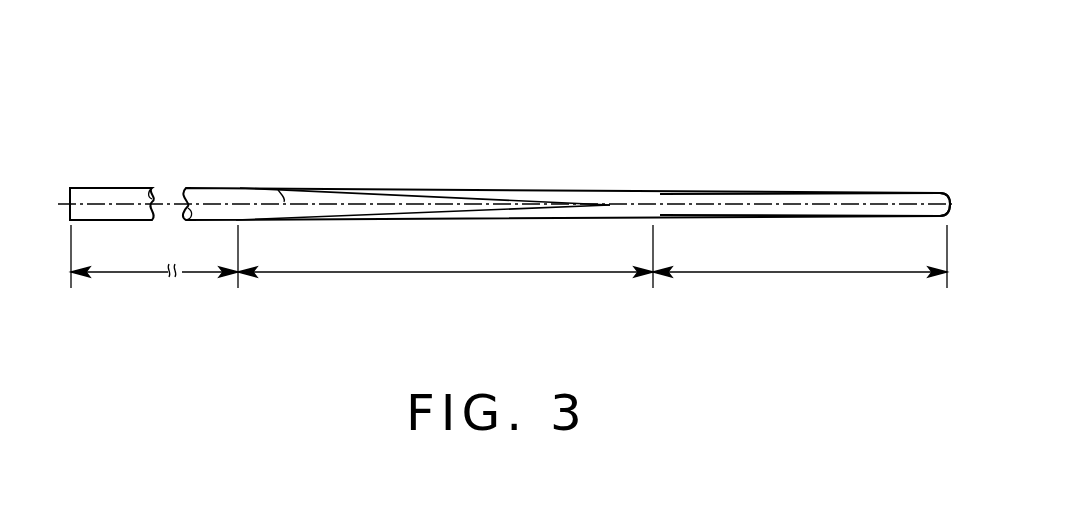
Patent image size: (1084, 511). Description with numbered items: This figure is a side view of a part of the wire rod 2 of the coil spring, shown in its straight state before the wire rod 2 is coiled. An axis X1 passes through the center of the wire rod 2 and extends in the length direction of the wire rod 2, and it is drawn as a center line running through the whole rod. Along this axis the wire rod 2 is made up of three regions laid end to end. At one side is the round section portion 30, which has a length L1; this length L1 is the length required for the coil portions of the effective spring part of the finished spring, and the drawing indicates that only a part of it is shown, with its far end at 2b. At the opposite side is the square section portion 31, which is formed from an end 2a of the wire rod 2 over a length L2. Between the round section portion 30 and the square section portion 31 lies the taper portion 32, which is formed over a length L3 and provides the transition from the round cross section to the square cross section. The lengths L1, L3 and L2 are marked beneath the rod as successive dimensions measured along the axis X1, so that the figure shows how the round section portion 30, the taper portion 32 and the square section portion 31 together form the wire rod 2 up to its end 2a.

The wire rod 2 is at (213, 187).
The end of the wire rod 2a is at (948, 199).
The proximal end of core wire 2b is at (70, 188).
The round section portion 30 is at (110, 186).
The square section portion 31 is at (847, 193).
The taper portion 32 is at (415, 189).
The axis X1 is at (284, 197).
The length of round section portion L1 is at (132, 273).
The length of square section portion L2 is at (802, 273).
The length of taper portion L3 is at (442, 273).